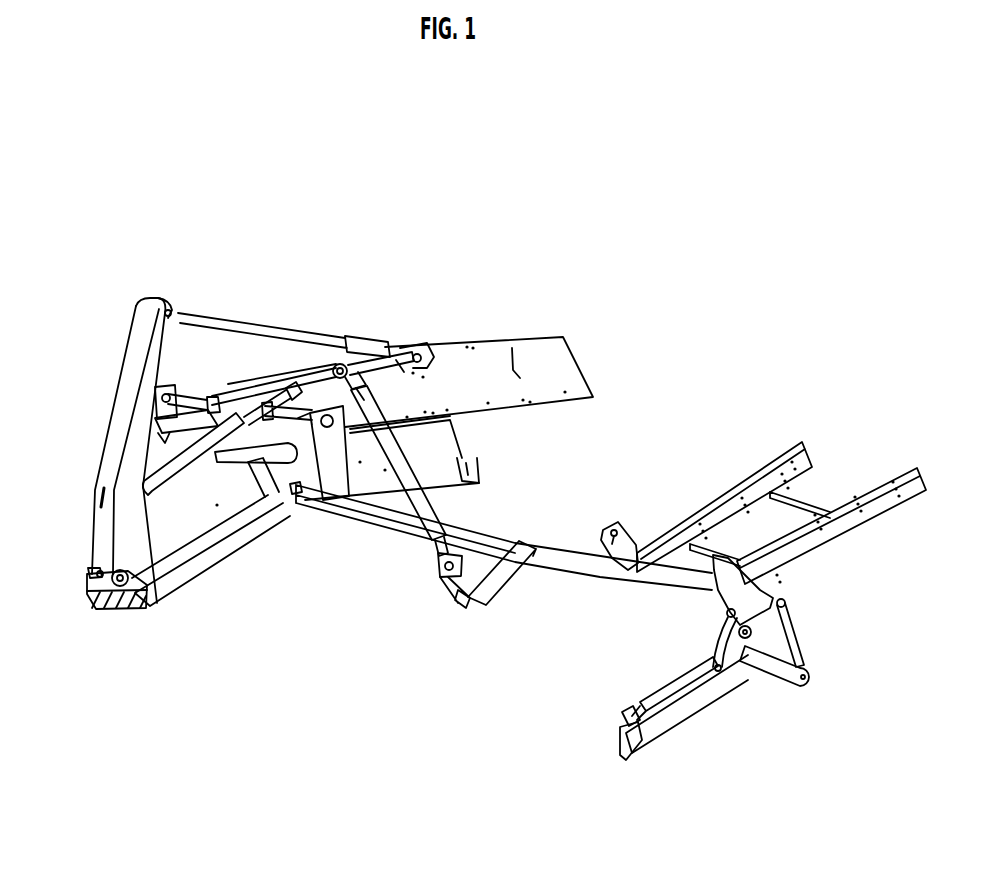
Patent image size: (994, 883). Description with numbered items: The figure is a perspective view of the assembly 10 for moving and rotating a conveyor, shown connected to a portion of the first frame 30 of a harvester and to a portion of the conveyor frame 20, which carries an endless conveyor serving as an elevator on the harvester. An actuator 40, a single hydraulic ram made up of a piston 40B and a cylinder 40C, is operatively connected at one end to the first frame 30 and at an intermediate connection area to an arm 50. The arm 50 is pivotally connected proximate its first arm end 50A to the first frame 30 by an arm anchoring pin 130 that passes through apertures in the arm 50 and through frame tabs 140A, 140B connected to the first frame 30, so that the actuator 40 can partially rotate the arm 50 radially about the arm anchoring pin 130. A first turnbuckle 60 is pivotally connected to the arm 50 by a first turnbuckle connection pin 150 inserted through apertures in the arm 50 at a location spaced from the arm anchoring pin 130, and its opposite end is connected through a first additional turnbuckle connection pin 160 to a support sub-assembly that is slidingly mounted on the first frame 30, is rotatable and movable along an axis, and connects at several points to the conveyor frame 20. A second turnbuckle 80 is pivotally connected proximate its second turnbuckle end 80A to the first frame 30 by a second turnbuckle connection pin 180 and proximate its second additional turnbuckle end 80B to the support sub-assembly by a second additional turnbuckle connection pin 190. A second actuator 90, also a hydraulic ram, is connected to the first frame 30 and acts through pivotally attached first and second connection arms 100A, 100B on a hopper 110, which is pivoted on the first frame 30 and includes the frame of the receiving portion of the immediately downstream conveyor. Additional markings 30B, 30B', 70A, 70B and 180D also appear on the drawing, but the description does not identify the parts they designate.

The assembly 10 is at (408, 303).
The conveyor frame 20 is at (513, 372).
The first frame 30 is at (266, 498).
The tie rod 30B is at (287, 314).
The tie rod end 30B' is at (203, 321).
The actuator 40 is at (122, 485).
The piston 40B is at (157, 607).
The cylinder 40C is at (193, 466).
The arm 50 is at (155, 395).
The first arm end 50A is at (298, 488).
The first turnbuckle 60 is at (250, 333).
The pivot link 70A is at (413, 343).
The pivot link 70B is at (382, 360).
The second turnbuckle 80 is at (402, 492).
The second turnbuckle end 80A is at (443, 580).
The second additional turnbuckle end 80B is at (350, 365).
The second actuator 90 is at (687, 693).
The first connection arm 100A is at (787, 687).
The second connection arm 100B is at (787, 637).
The hopper 110 is at (803, 567).
The arm anchoring pin 130 is at (122, 590).
The frame tab 140A is at (100, 572).
The frame tab 140B is at (120, 590).
The first turnbuckle connection pin 150 is at (186, 386).
The first additional turnbuckle connection pin 160 is at (404, 366).
The second turnbuckle connection pin 180 is at (440, 562).
The strut pivot 180D is at (353, 352).
The second additional turnbuckle connection pin 190 is at (322, 385).